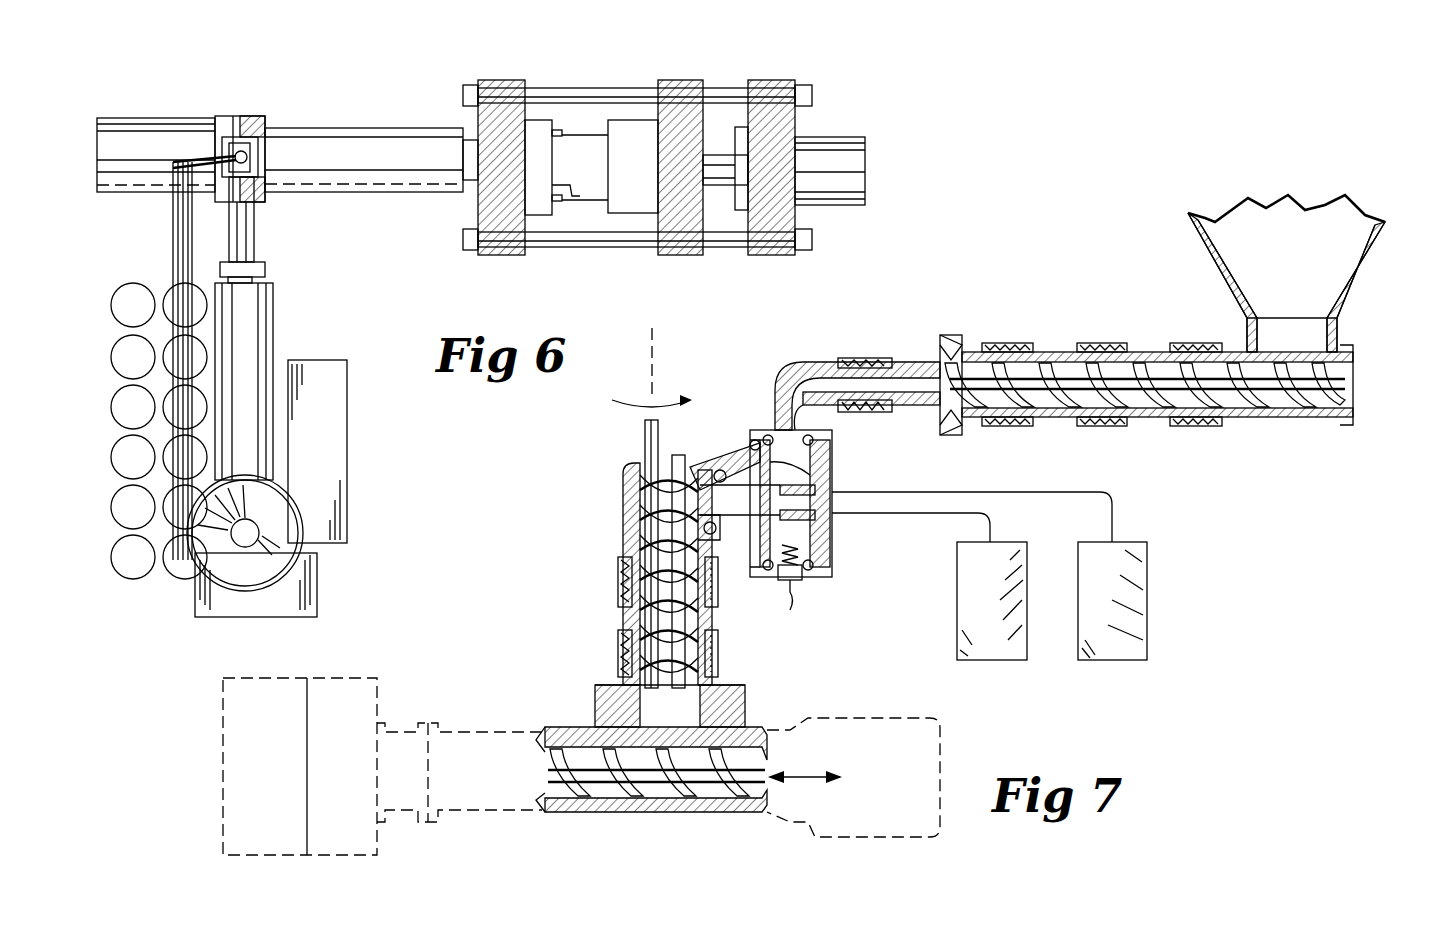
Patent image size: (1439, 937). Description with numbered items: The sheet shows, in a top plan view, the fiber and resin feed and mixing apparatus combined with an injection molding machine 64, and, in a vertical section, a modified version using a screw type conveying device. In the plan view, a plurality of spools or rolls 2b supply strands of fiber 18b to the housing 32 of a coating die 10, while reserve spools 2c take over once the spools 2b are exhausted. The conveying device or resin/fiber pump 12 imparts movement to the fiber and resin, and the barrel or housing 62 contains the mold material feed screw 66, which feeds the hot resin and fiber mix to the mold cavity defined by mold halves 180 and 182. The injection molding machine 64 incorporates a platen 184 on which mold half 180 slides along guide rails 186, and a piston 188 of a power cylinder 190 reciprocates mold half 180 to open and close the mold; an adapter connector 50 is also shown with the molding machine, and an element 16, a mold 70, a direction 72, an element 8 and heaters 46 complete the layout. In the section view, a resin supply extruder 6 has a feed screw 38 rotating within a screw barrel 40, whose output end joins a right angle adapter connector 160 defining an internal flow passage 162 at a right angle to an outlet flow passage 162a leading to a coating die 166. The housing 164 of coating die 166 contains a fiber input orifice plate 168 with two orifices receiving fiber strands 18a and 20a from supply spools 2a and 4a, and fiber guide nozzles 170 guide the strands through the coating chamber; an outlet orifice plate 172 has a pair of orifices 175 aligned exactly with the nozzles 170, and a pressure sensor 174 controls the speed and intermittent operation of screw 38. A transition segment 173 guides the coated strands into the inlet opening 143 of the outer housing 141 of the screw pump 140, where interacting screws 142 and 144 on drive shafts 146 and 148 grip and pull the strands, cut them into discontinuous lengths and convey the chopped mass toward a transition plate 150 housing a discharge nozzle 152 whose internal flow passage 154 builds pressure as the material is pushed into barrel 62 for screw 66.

In FIG. 6, the mold / drive tube 70 is at (105, 118).
In FIG. 7, the mold / drive tube 70 is at (942, 738).
In FIG. 6, the conveying device 12 is at (270, 112).
In FIG. 7, the conveying device 12 is at (612, 468).
In FIG. 6, the coating die 10 is at (240, 130).
In FIG. 6, the housing 32 is at (224, 148).
In FIG. 6, the drive shaft 16 is at (360, 126).
In FIG. 7, the drive shaft 16 is at (481, 722).
In FIG. 6, the barrel or housing 62 is at (371, 192).
In FIG. 7, the barrel or housing 62 is at (560, 815).
In FIG. 6, the strands of fiber 18b is at (176, 238).
In FIG. 6, the adapter connector 50 is at (255, 243).
In FIG. 6, the extruder barrel 40 is at (275, 338).
In FIG. 7, the extruder barrel 40 is at (1262, 420).
In FIG. 6, the hopper / frame 8 is at (320, 540).
In FIG. 7, the hopper / frame 8 is at (1330, 212).
In FIG. 6, the reserve fiber spools 2c is at (118, 290).
In FIG. 6, the spools or rolls 2b is at (172, 284).
In FIG. 6, the injection molding machine 64 is at (691, 173).
In FIG. 7, the injection molding machine 64 is at (330, 678).
In FIG. 6, the guide rails 186 is at (640, 88).
In FIG. 6, the mold half 180 is at (600, 132).
In FIG. 6, the mold half 182 is at (578, 196).
In FIG. 6, the platen 184 is at (690, 258).
In FIG. 6, the piston 188 is at (720, 185).
In FIG. 6, the power cylinder 190 is at (865, 170).
In FIG. 7, the mold feed screw 66 is at (602, 812).
In FIG. 7, the internal flow passage 154 is at (678, 810).
In FIG. 7, the discharge nozzle 152 is at (710, 812).
In FIG. 7, the reciprocation direction 72 is at (792, 760).
In FIG. 7, the transition plate 150 is at (595, 702).
In FIG. 7, the drive shaft 148 is at (705, 690).
In FIG. 7, the screw pump or conveyor 140 is at (620, 492).
In FIG. 7, the outer housing 141 is at (625, 522).
In FIG. 7, the screw 142 is at (640, 530).
In FIG. 7, the screw shaft 146 is at (645, 425).
In FIG. 7, the inlet opening 143 is at (715, 540).
In FIG. 7, the screw 144 is at (718, 626).
In FIG. 7, the heaters 46 is at (618, 655).
In FIG. 7, the outlet orifice plate 172 is at (738, 470).
In FIG. 7, the transition segment 173 is at (730, 462).
In FIG. 7, the coating die 166 is at (835, 592).
In FIG. 7, the housing 164 is at (838, 442).
In FIG. 7, the orifices 175 is at (820, 472).
In FIG. 7, the fiber input orifice plate 168 is at (795, 495).
In FIG. 7, the fiber guide nozzles 170 is at (800, 505).
In FIG. 7, the pressure sensor 174 is at (798, 600).
In FIG. 7, the outlet flow passage 162a is at (775, 430).
In FIG. 7, the adapter connector 160 is at (837, 374).
In FIG. 7, the internal flow passage 162 is at (890, 367).
In FIG. 7, the resin supply extruder 6 is at (1162, 314).
In FIG. 7, the feed screw 38 is at (1305, 402).
In FIG. 7, the fiber strand 18a is at (1028, 492).
In FIG. 7, the fiber strand 20a is at (994, 524).
In FIG. 7, the supply spool 2a is at (1008, 660).
In FIG. 7, the supply spool 4a is at (1145, 590).